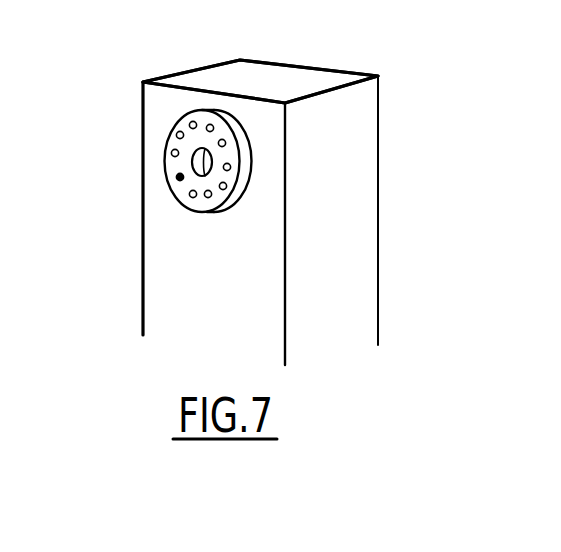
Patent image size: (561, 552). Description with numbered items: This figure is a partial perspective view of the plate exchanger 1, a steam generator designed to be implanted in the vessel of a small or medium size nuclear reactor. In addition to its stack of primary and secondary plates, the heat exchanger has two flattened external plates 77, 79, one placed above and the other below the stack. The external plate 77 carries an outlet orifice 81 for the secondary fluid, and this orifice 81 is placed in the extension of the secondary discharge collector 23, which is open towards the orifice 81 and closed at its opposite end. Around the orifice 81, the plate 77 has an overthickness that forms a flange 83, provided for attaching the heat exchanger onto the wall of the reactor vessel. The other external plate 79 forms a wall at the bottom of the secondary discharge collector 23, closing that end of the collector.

The plate exchanger 1 is at (131, 308).
The secondary discharge collector 23 is at (178, 177).
The external plate 77 is at (170, 242).
The external plate 79 is at (297, 66).
The outlet orifice 81 is at (193, 167).
The flange 83 is at (184, 128).